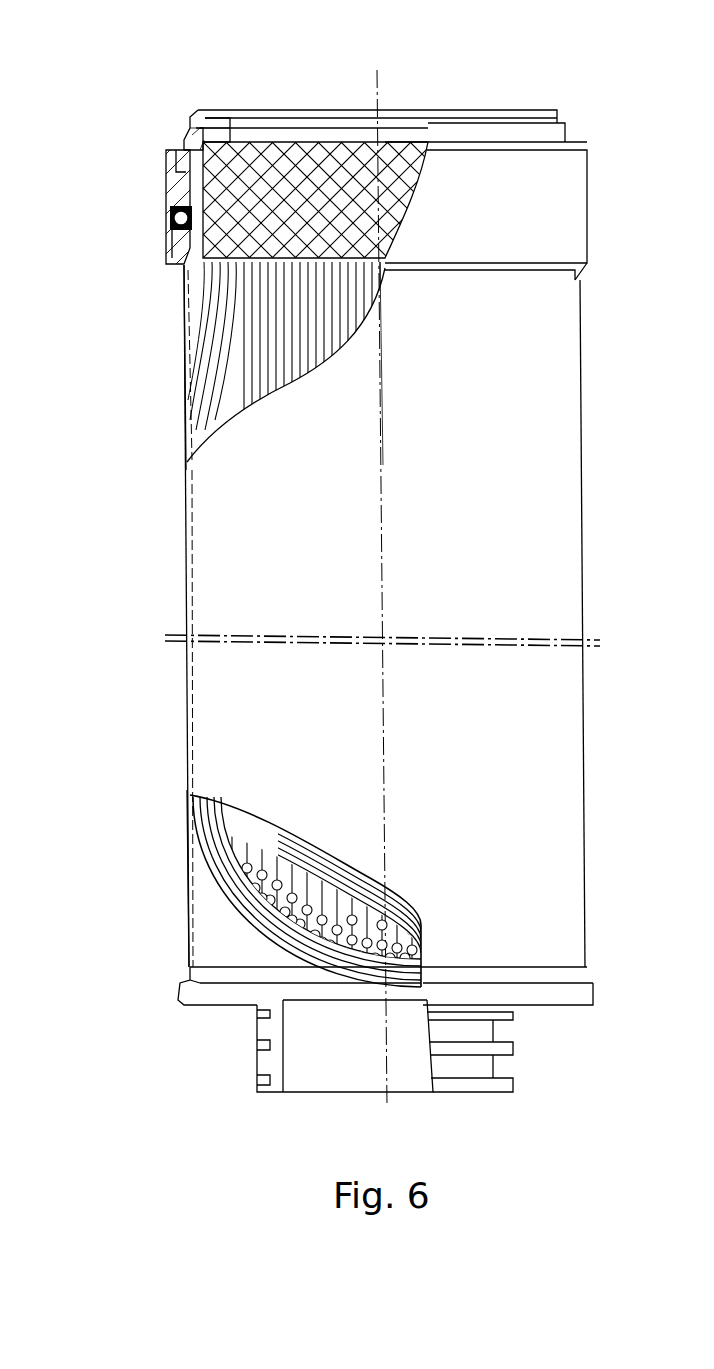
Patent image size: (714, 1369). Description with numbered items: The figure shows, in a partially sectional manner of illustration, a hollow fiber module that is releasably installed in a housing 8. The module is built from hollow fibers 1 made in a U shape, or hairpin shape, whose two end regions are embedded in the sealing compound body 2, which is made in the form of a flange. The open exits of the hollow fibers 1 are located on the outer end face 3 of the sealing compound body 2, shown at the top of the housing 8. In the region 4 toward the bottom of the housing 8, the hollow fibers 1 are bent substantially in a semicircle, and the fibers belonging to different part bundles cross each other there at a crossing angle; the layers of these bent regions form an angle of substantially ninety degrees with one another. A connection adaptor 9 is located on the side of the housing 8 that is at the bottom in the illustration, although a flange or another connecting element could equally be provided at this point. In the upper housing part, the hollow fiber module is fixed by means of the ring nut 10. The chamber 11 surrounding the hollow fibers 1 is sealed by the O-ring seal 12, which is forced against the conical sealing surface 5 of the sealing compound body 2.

The hollow fibers 1 is at (218, 398).
The sealing compound body 2 is at (348, 118).
The outer end face 3 is at (270, 110).
The region of semicircularly bent hollow fibers 4 is at (250, 912).
The conical sealing surface 5 is at (197, 207).
The housing 8 is at (503, 487).
The connection adaptor 9 is at (315, 1072).
The ring nut 10 is at (190, 122).
The chamber 11 is at (197, 308).
The O-ring seal 12 is at (177, 228).